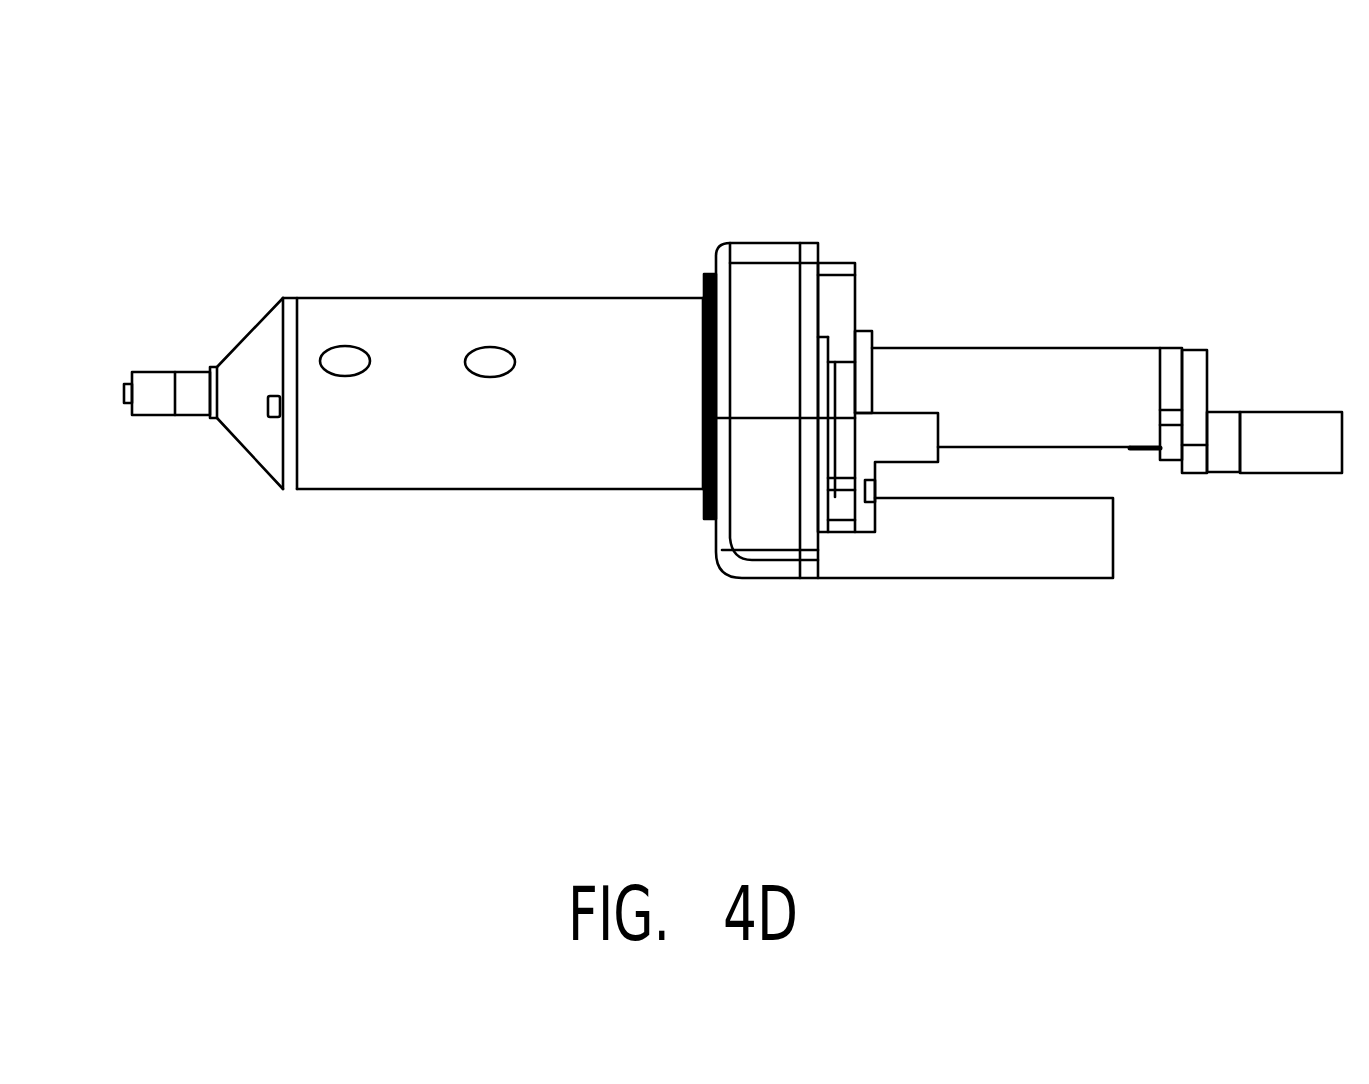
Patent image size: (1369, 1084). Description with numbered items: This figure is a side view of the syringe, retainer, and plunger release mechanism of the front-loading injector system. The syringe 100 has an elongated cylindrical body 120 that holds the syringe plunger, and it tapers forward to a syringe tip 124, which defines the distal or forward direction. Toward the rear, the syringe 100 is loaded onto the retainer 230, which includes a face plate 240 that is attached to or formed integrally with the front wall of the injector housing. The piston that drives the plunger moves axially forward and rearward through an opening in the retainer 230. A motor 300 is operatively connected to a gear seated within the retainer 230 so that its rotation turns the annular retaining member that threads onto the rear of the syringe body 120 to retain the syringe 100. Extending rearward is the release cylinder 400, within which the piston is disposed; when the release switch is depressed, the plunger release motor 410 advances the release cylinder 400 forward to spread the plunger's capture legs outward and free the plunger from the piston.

The syringe 100 is at (447, 512).
The elongated cylindrical body 120 is at (420, 297).
The syringe tip 124 is at (130, 413).
The retainer 230 is at (768, 242).
The face plate 240 is at (716, 257).
The motor 300 is at (993, 578).
The release cylinder 400 is at (1092, 347).
The plunger release motor 410 is at (1293, 477).